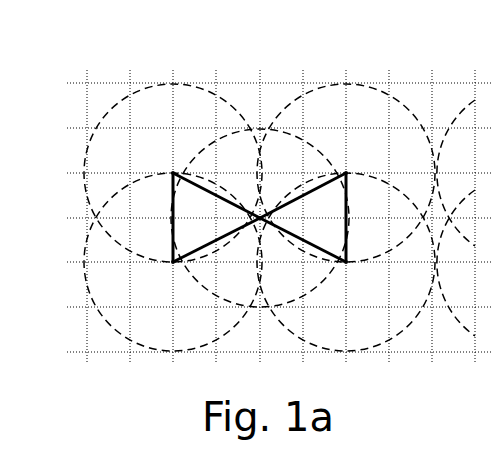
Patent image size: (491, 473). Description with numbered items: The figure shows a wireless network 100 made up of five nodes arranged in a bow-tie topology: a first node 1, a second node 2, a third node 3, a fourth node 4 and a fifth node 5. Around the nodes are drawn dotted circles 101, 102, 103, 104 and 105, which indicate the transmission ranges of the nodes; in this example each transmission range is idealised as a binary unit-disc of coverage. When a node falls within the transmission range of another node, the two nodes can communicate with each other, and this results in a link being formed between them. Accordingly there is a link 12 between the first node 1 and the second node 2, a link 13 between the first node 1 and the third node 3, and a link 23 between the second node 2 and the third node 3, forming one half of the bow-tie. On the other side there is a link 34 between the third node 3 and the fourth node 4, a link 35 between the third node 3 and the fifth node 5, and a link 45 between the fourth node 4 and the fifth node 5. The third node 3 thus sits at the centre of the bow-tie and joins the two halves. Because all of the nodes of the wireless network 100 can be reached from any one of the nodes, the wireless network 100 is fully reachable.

The wireless network 100 is at (200, 62).
The dotted circle 101 is at (133, 90).
The dotted circle 102 is at (130, 345).
The dotted circle 103 is at (262, 310).
The dotted circle 104 is at (400, 105).
The dotted circle 105 is at (382, 343).
The first node 1 is at (167, 173).
The second node 2 is at (167, 270).
The third node 3 is at (272, 221).
The fourth node 4 is at (355, 173).
The fifth node 5 is at (355, 270).
The link 12 is at (172, 200).
The link 13 is at (224, 197).
The link 23 is at (216, 241).
The link 34 is at (316, 189).
The link 35 is at (303, 241).
The link 45 is at (349, 217).